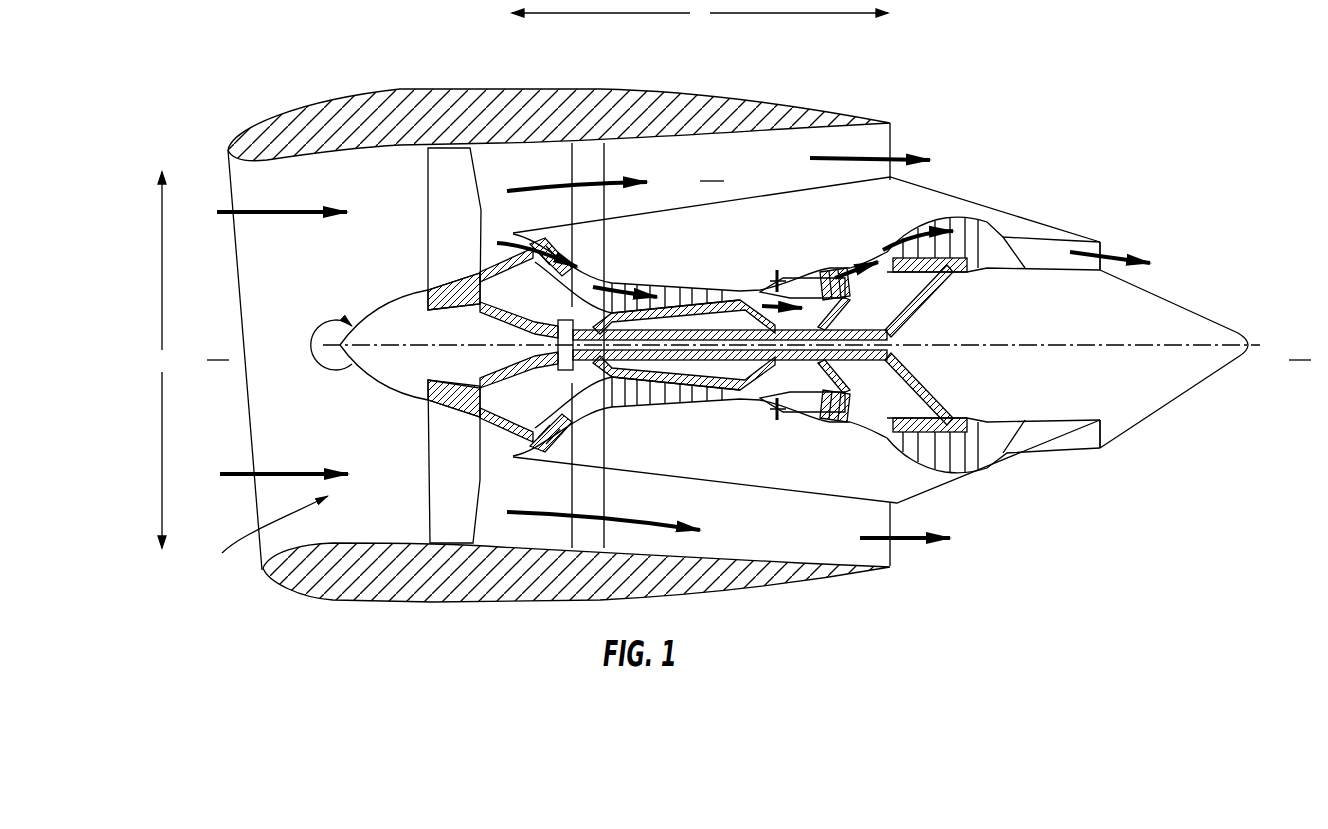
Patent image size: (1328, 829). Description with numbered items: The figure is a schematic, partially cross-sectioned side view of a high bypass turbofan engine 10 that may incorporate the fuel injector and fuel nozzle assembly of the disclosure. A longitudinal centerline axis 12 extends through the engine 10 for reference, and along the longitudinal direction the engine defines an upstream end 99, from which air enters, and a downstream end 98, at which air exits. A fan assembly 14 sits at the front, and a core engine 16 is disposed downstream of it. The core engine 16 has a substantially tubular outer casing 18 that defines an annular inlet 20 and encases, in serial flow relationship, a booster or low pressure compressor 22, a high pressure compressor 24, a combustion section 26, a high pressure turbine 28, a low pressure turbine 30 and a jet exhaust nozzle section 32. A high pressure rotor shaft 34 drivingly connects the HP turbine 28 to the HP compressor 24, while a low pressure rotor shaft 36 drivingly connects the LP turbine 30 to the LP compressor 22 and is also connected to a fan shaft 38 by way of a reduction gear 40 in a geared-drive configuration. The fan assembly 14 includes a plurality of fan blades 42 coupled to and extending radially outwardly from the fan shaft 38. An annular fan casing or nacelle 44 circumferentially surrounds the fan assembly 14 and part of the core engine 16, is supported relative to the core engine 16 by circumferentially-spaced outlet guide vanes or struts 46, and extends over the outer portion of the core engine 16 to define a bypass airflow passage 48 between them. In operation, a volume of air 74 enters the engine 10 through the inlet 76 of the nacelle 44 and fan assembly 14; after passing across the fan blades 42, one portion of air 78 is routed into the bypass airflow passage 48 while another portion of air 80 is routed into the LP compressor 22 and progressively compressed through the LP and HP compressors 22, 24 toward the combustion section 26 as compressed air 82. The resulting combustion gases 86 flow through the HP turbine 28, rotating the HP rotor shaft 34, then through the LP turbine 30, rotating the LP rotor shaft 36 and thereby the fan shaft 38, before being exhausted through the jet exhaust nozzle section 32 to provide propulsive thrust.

The high bypass turbofan engine 10 is at (727, 301).
The longitudinal centerline axis 12 is at (1043, 343).
The fan assembly 14 is at (496, 160).
The core engine 16 is at (789, 170).
The outer casing 18 is at (753, 502).
The annular inlet 20 is at (512, 450).
The low pressure compressor 22 is at (565, 423).
The high pressure compressor 24 is at (634, 402).
The combustion section 26 is at (794, 405).
The high pressure turbine 28 is at (848, 404).
The low pressure turbine 30 is at (968, 478).
The jet exhaust nozzle section 32 is at (1029, 458).
The high pressure rotor shaft 34 is at (833, 315).
The low pressure rotor shaft 36 is at (920, 300).
The fan shaft 38 is at (477, 316).
The reduction gear 40 is at (560, 312).
The fan blades 42 is at (447, 447).
The nacelle 44 is at (430, 95).
The outlet guide vanes 46 is at (592, 167).
The bypass airflow passage 48 is at (794, 344).
The volume of air 74 is at (262, 474).
The inlet 76 is at (264, 543).
The bypass air 78 is at (905, 545).
The core air 80 is at (510, 250).
The compressed air 82 is at (622, 283).
The combustion gases 86 is at (1118, 258).
The downstream end 98 is at (1300, 345).
The upstream end 99 is at (218, 342).